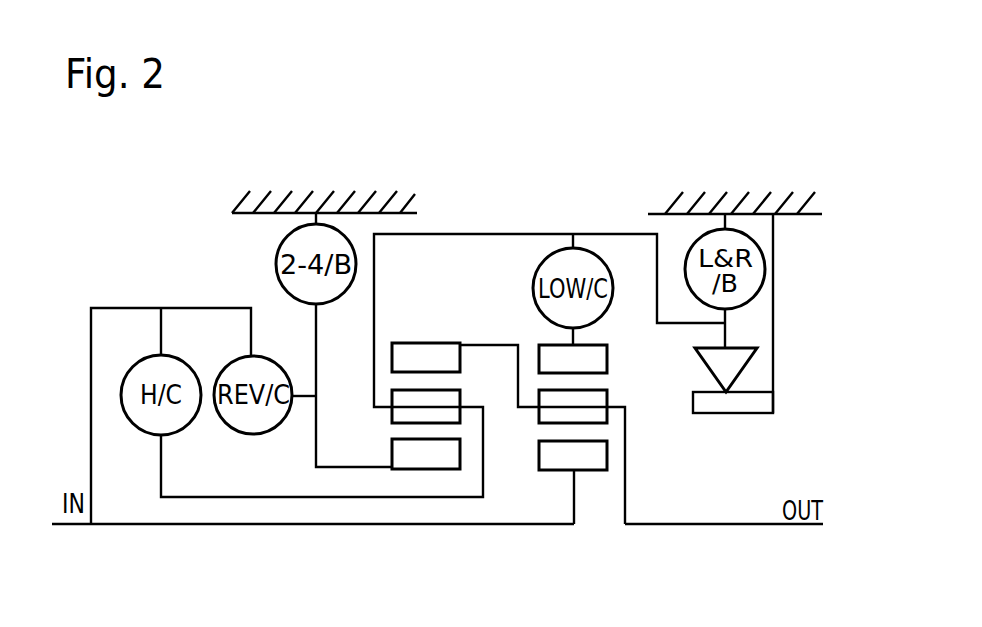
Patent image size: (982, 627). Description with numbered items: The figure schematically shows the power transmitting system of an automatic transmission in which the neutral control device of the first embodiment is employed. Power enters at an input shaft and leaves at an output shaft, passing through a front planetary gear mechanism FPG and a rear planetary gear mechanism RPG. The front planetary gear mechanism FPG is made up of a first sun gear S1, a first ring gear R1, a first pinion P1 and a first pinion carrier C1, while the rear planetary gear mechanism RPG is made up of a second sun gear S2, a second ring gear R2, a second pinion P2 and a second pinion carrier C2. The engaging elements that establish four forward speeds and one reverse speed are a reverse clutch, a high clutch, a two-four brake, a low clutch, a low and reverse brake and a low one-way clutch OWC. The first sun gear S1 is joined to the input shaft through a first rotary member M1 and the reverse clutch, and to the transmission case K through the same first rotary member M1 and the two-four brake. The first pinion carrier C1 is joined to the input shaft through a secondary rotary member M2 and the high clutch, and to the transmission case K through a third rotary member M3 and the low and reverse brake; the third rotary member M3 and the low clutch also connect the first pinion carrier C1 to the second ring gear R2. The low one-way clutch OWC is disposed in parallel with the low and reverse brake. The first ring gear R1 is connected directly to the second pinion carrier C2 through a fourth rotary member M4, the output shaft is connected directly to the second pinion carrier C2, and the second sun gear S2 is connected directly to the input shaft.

The transmission case K is at (393, 213).
The first rotary member M1 is at (354, 386).
The secondary rotary member M2 is at (322, 452).
The third rotary member M3 is at (549, 320).
The fourth rotary member M4 is at (499, 360).
The first ring gear R1 is at (426, 358).
The first sun gear S1 is at (426, 454).
The first pinion carrier C1 is at (478, 408).
The second ring gear R2 is at (573, 359).
The second sun gear S2 is at (573, 456).
The second pinion carrier C2 is at (623, 408).
The first pinion P1 is at (450, 391).
The second pinion P2 is at (606, 391).
The low one-way clutch OWC is at (770, 383).
The front planetary gear mechanism FPG is at (430, 542).
The rear planetary gear mechanism RPG is at (570, 542).